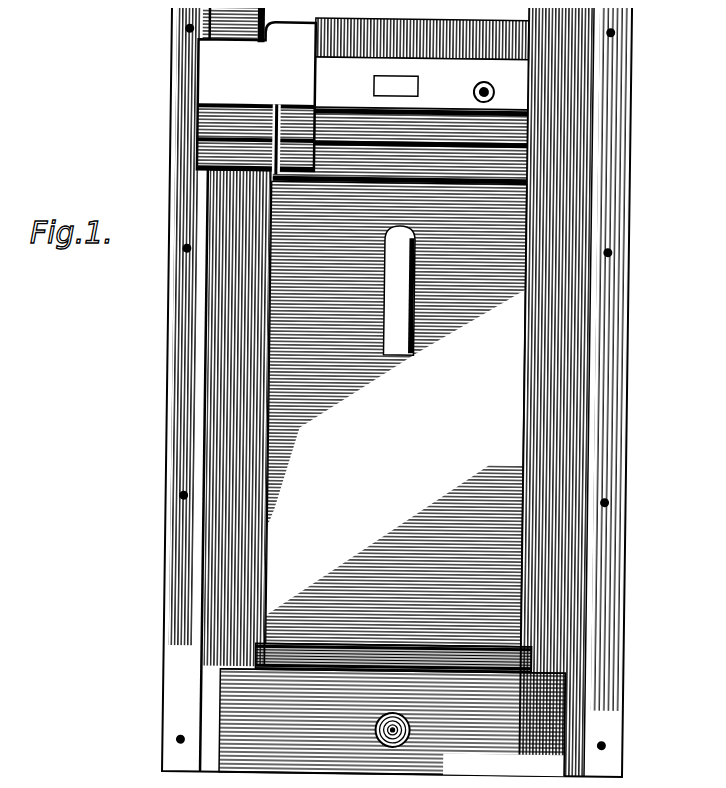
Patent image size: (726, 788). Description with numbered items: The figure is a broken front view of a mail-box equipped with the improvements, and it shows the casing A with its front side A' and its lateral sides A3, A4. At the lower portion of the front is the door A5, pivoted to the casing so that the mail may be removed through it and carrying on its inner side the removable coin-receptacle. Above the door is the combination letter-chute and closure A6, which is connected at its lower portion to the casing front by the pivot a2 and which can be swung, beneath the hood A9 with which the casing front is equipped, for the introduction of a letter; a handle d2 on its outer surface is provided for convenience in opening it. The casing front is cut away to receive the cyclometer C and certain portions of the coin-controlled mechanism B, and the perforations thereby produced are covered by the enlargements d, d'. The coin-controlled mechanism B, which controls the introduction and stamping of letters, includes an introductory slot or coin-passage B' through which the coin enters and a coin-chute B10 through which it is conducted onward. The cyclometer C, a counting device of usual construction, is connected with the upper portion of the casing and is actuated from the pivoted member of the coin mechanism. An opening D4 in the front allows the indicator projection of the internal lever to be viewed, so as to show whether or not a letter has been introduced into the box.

The casing A is at (408, 392).
The lateral side A3 is at (160, 405).
The lateral side A4 is at (612, 550).
The front side A' is at (398, 392).
The combination letter-chute and closure A6 is at (396, 413).
The handle d2 is at (409, 268).
The pivot a2 is at (522, 652).
The door A5 is at (392, 723).
The hood A9 is at (400, 145).
The enlargement d' is at (422, 64).
The cyclometer C is at (410, 80).
The opening D4 is at (486, 72).
The coin-controlled mechanism B is at (256, 89).
The introductory slot or coin-passage B' is at (197, 37).
The enlargement d is at (267, 121).
The coin-chute B10 is at (238, 156).